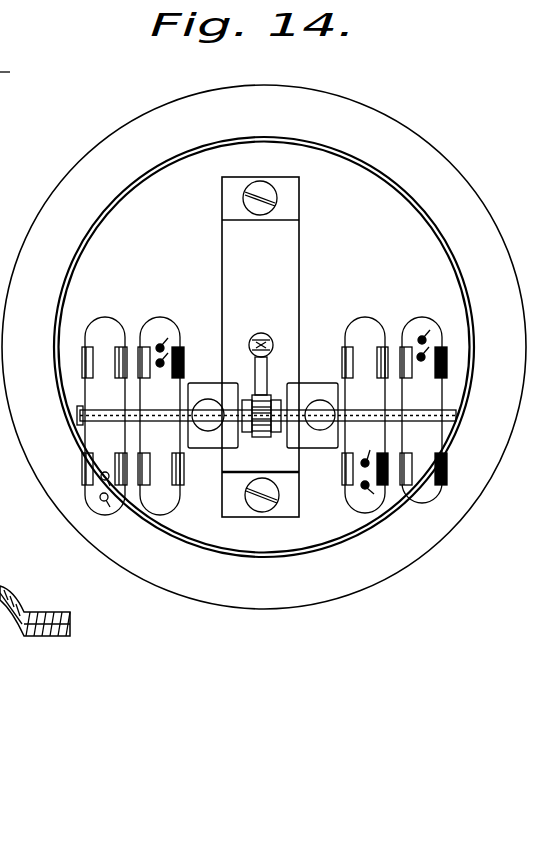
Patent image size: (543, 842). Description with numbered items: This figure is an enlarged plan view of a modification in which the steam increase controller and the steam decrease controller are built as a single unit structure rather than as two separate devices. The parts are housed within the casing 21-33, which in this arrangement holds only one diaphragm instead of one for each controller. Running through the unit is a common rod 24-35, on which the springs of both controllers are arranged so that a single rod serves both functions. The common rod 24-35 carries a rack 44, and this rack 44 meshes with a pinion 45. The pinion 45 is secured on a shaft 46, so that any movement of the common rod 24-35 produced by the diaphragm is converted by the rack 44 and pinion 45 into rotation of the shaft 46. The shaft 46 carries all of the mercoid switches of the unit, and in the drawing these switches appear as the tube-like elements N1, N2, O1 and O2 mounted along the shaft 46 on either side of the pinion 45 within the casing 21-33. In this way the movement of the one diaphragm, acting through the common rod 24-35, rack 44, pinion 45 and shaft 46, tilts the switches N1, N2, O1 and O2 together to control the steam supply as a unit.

The casing 21-33 is at (422, 167).
The common rod 24-35 is at (257, 338).
The rack 44 is at (290, 319).
The pinion 45 is at (264, 432).
The shaft 46 is at (456, 415).
The lamp tube N1 is at (157, 320).
The lamp tube N2 is at (103, 318).
The lamp tube O1 is at (362, 320).
The lamp tube O2 is at (418, 322).